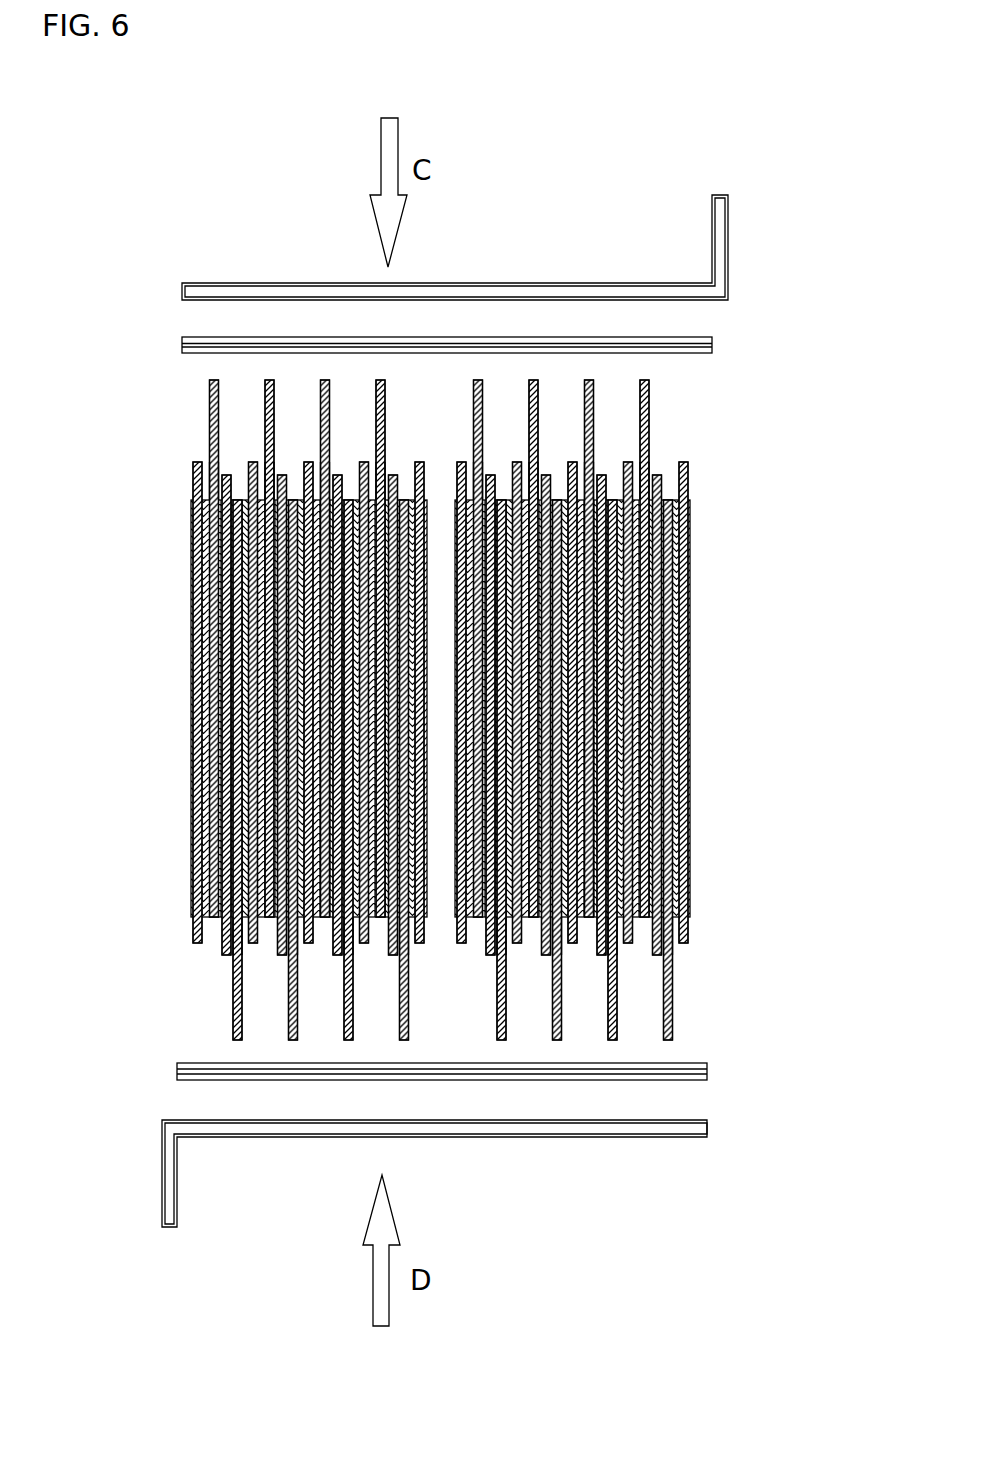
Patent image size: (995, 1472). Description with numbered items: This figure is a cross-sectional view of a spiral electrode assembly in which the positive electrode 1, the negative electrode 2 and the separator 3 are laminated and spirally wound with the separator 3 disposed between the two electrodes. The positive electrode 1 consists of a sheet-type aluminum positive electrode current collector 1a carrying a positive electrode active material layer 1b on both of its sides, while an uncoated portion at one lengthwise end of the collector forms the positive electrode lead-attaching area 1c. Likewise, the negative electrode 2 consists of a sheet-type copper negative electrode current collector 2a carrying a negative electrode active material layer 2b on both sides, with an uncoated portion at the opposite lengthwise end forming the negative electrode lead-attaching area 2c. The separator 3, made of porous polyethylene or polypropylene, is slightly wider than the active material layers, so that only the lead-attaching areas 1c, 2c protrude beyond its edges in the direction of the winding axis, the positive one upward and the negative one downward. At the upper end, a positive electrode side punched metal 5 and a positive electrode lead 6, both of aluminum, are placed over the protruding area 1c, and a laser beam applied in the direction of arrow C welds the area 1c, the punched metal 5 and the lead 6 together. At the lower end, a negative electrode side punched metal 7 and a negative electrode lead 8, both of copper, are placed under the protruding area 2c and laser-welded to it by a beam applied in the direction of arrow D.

The positive electrode 1 is at (745, 360).
The positive electrode current collector 1a is at (654, 421).
The positive electrode active material layer 1b is at (712, 480).
The positive electrode lead-attaching area 1c is at (649, 445).
The negative electrode 2 is at (766, 925).
The negative electrode current collector 2a is at (676, 1003).
The negative electrode active material layer 2b is at (677, 958).
The negative electrode lead-attaching area 2c is at (672, 980).
The separator 3 is at (686, 640).
The positive electrode side punched metal 5 is at (734, 343).
The positive electrode lead 6 is at (764, 231).
The negative electrode side punched metal 7 is at (707, 1076).
The negative electrode lead 8 is at (707, 1128).